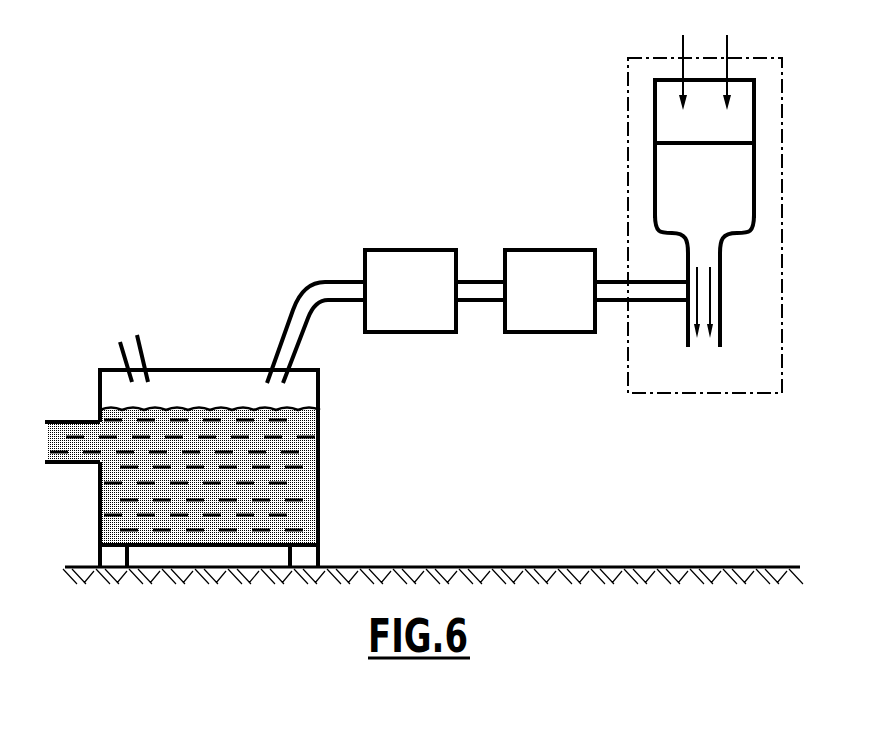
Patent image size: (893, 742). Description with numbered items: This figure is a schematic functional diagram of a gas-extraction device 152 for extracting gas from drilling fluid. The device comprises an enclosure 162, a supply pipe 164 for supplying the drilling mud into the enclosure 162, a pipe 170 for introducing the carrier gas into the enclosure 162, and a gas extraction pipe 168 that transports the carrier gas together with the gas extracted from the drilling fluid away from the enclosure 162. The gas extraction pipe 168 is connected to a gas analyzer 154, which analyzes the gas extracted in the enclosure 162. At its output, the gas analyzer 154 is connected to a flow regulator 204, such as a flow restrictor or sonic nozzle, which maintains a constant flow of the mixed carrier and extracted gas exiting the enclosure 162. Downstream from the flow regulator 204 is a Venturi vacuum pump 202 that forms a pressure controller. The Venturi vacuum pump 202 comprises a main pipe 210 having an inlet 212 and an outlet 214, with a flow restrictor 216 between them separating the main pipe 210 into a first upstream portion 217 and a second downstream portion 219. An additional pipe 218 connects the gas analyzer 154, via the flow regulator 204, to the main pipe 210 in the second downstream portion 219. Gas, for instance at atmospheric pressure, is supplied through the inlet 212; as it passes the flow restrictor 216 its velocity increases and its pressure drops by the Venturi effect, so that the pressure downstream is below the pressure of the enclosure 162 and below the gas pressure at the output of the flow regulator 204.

The gas-extraction device 152 is at (153, 302).
The gas analyzer 154 is at (415, 255).
The enclosure 162 is at (347, 482).
The supply pipe 164 is at (62, 467).
The gas extraction pipe 168 is at (287, 337).
The pipe 170 is at (122, 345).
The Venturi vacuum pump 202 is at (793, 118).
The flow regulator 204 is at (547, 255).
The main pipe 210 is at (763, 200).
The inlet 212 is at (740, 78).
The outlet 214 is at (702, 352).
The flow restrictor 216 is at (735, 240).
The first upstream portion 217 is at (665, 172).
The additional pipe 218 is at (638, 302).
The second downstream portion 219 is at (713, 302).